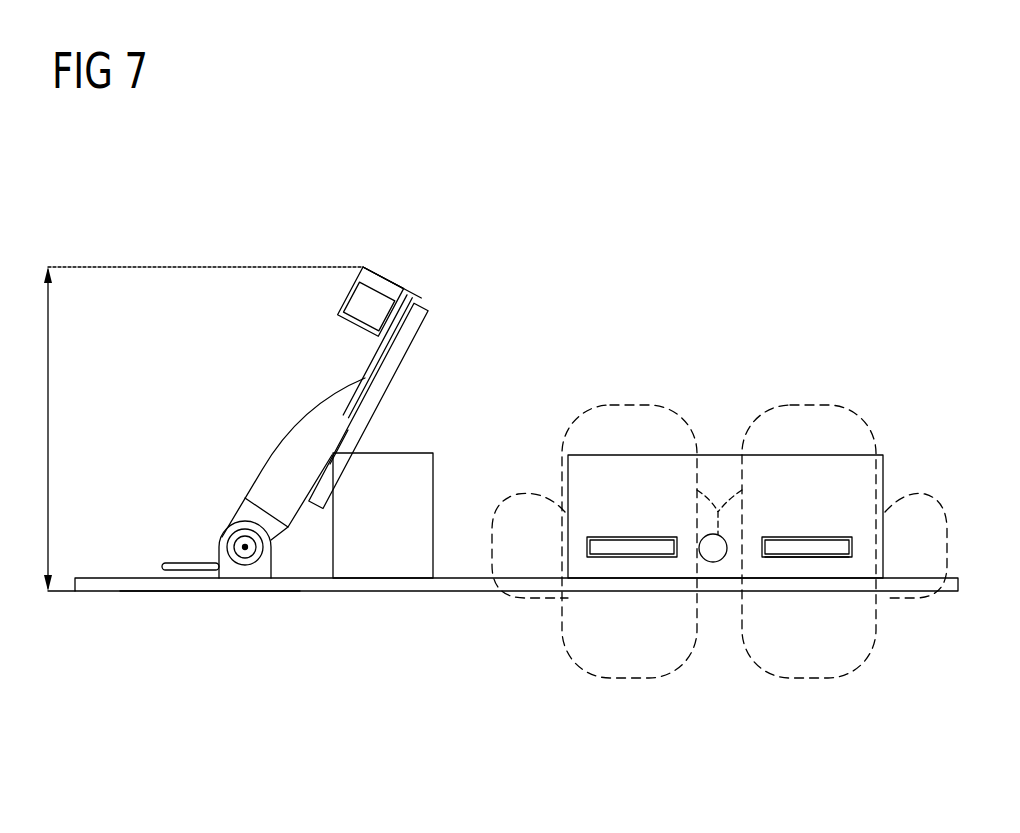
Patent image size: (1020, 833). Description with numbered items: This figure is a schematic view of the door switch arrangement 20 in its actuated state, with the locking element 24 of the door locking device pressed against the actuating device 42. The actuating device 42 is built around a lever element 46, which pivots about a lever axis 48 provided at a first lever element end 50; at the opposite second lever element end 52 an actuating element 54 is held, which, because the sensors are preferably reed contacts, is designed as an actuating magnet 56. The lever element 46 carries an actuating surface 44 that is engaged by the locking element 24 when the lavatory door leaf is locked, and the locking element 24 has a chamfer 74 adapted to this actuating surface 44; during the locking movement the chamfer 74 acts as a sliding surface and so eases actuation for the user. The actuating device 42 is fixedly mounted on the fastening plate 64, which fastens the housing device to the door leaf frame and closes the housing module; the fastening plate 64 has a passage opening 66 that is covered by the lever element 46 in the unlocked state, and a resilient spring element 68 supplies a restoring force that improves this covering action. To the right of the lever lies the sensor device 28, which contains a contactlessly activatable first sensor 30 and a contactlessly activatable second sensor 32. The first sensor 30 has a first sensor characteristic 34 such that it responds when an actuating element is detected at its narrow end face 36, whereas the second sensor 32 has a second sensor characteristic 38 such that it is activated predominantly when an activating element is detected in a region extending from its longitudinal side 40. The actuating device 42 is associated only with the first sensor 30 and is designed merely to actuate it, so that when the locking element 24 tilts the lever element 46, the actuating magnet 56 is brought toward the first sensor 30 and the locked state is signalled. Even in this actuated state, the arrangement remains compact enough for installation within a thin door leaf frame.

The door switch arrangement 20 is at (150, 212).
The locking element 24 is at (408, 472).
The sensor device 28 is at (725, 352).
The first sensor 30 is at (632, 537).
The second sensor 32 is at (808, 537).
The first sensor characteristic 34 is at (520, 498).
The narrow end face 36 is at (587, 547).
The second sensor characteristic 38 is at (826, 679).
The longitudinal side 40 is at (808, 558).
The actuating device 42 is at (358, 246).
The actuating surface 44 is at (338, 468).
The lever element 46 is at (300, 348).
The lever axis 48 is at (240, 544).
The first lever element end 50 is at (226, 602).
The second lever element end 52 is at (412, 250).
The actuating element 54 is at (381, 300).
The actuating magnet 56 is at (388, 314).
The fastening plate 64 is at (102, 586).
The passage opening 66 is at (375, 592).
The spring element 68 is at (214, 490).
The chamfer 74 is at (332, 447).